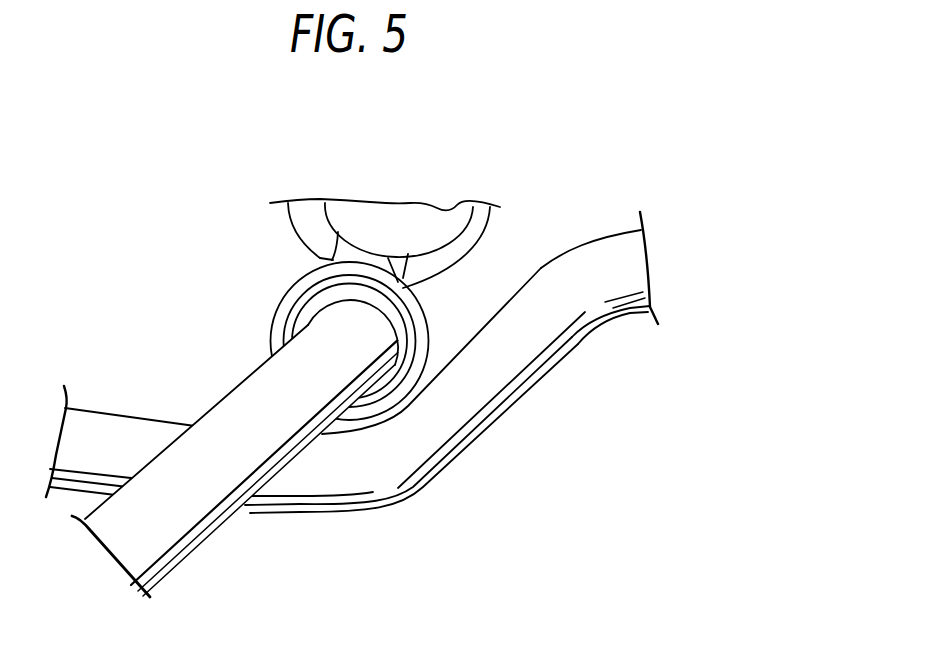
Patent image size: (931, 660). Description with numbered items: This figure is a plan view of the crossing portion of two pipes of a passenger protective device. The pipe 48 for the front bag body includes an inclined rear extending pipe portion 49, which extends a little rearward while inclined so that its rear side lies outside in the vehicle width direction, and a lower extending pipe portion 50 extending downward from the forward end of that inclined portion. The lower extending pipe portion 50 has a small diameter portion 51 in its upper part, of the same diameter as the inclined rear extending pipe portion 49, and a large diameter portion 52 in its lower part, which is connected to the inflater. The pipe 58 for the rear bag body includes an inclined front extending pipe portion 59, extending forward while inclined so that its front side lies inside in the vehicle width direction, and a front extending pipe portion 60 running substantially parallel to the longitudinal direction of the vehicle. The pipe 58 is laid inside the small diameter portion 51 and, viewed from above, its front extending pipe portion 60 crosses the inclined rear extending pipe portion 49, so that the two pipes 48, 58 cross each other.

The pipe 48 is at (194, 566).
The inclined rear extending pipe portion 49 is at (242, 400).
The lower extending pipe portion 50 is at (410, 318).
The small diameter portion 51 is at (423, 320).
The large diameter portion 52 is at (332, 296).
The pipe 58 is at (600, 336).
The inclined front extending pipe portion 59 is at (466, 401).
The front extending pipe portion 60 is at (103, 432).